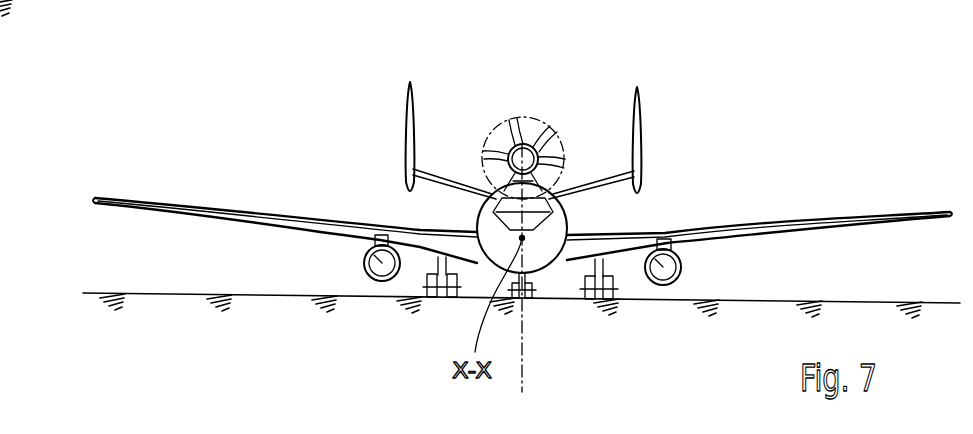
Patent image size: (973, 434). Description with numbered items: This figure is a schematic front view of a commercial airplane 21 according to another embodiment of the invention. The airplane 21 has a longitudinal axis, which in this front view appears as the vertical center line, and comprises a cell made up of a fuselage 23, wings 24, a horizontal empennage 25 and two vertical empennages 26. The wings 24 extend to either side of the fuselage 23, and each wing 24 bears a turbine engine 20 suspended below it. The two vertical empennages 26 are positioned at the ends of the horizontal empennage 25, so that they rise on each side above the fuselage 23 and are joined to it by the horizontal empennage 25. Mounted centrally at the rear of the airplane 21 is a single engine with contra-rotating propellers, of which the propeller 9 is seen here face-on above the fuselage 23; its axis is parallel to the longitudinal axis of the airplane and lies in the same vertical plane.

The contra-rotating propeller 9 is at (525, 128).
The turbine engine 20 is at (370, 280).
The commercial airplane 21 is at (316, 84).
The fuselage 23 is at (564, 214).
The wing 24 is at (208, 206).
The horizontal empennage 25 is at (455, 181).
The vertical empennage 26 is at (405, 117).